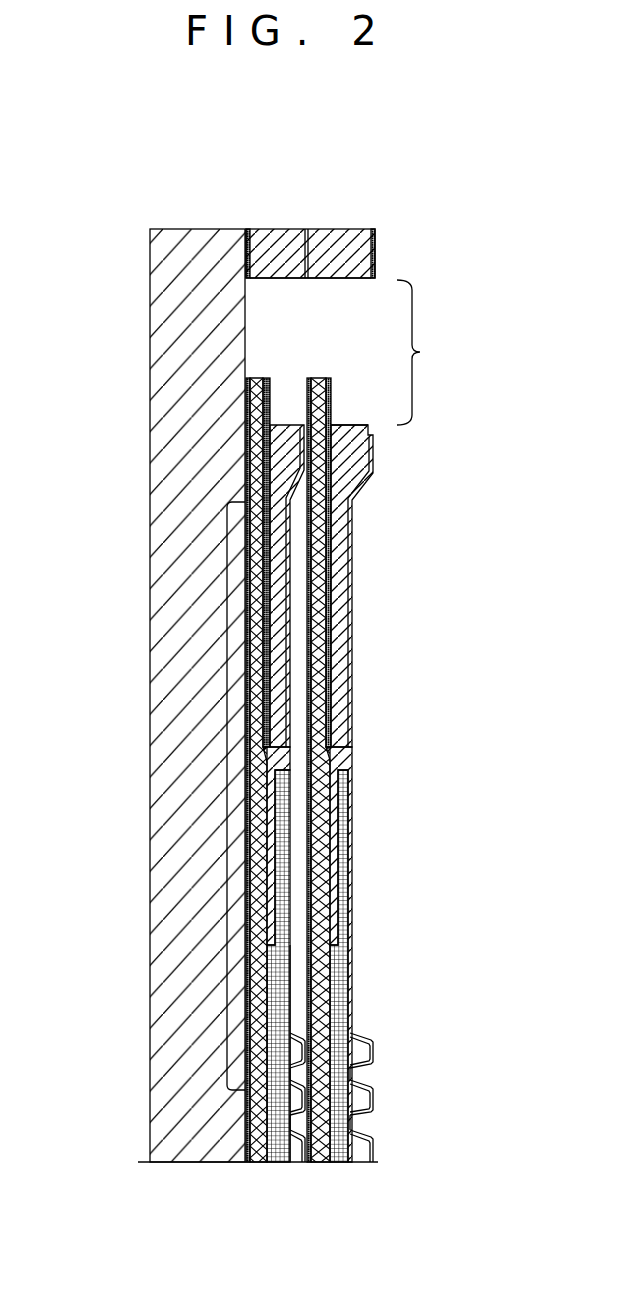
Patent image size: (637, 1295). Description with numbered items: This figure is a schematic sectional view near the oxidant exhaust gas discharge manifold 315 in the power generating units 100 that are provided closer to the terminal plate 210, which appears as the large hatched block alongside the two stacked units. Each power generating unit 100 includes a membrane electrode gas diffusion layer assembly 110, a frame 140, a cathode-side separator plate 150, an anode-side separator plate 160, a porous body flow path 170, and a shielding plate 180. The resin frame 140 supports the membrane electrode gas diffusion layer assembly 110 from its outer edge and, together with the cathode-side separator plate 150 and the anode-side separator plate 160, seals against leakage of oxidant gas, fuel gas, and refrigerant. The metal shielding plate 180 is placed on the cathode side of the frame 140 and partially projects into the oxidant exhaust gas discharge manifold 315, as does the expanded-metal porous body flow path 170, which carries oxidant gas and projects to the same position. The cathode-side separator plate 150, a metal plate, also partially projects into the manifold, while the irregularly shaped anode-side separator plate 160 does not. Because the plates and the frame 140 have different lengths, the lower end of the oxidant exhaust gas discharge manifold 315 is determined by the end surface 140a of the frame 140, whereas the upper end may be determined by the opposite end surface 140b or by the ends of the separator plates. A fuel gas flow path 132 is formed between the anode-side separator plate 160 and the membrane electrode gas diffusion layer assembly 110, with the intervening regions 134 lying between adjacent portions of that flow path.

The power generating unit 100 is at (308, 229).
The membrane electrode gas diffusion layer assembly 110 is at (285, 972).
The fuel gas flow path 132 is at (292, 1040).
The gap between fins 134 is at (292, 1070).
The frame 140 is at (285, 480).
The end surface of the frame 140a is at (355, 416).
The opposite end surface of the frame 140b is at (357, 284).
The cathode-side separator plate 150 is at (250, 598).
The anode-side separator plate 160 is at (272, 727).
The porous body flow path 170 is at (262, 668).
The shielding plate 180 is at (266, 530).
The terminal plate 210 is at (162, 229).
The oxidant exhaust gas discharge manifold 315 is at (437, 352).